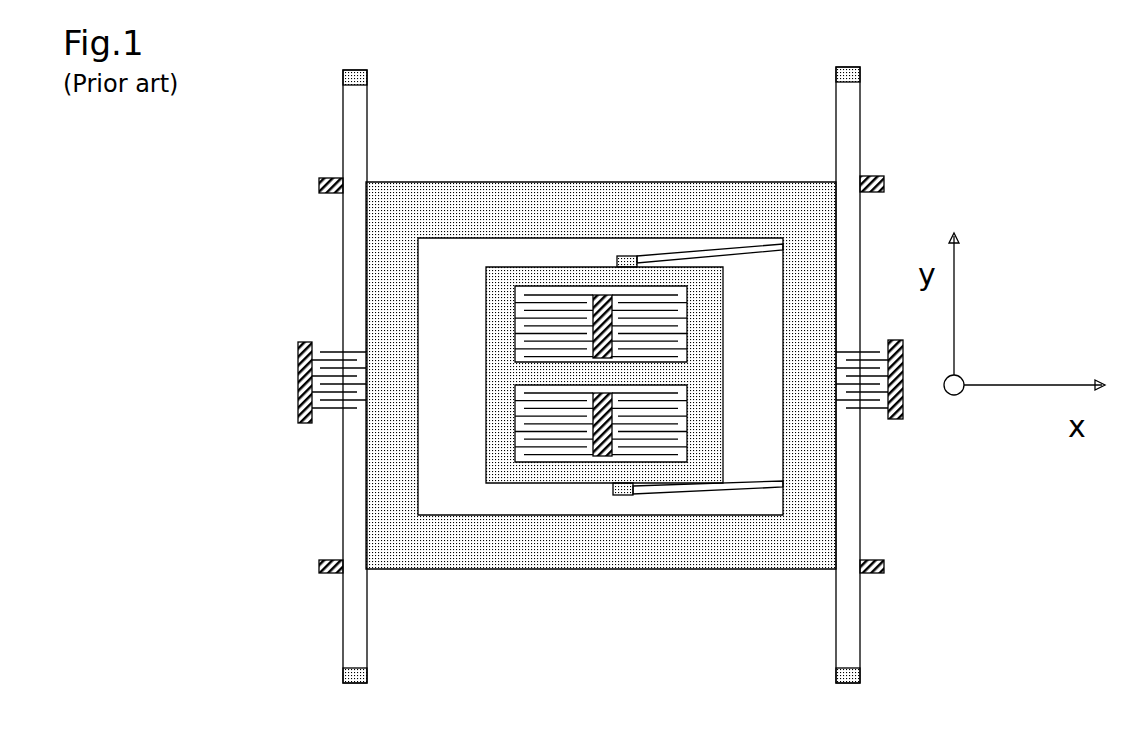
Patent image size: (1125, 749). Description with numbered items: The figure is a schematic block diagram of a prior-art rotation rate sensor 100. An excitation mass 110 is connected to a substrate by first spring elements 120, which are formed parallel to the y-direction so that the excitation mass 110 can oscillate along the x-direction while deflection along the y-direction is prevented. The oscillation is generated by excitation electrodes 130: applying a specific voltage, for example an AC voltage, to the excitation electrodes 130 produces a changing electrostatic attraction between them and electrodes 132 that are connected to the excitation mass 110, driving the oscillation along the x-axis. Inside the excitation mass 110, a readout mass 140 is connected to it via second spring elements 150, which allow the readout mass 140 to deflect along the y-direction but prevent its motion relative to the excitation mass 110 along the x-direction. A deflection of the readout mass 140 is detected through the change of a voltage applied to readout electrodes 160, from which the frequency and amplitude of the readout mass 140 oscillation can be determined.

The rotation rate sensor 100 is at (474, 100).
The excitation mass 110 is at (600, 182).
The first spring elements 120 is at (367, 133).
The excitation electrodes 130 is at (320, 410).
The electrodes 132 is at (337, 352).
The readout mass 140 is at (486, 382).
The second spring elements 150 is at (727, 249).
The readout electrodes 160 is at (562, 447).